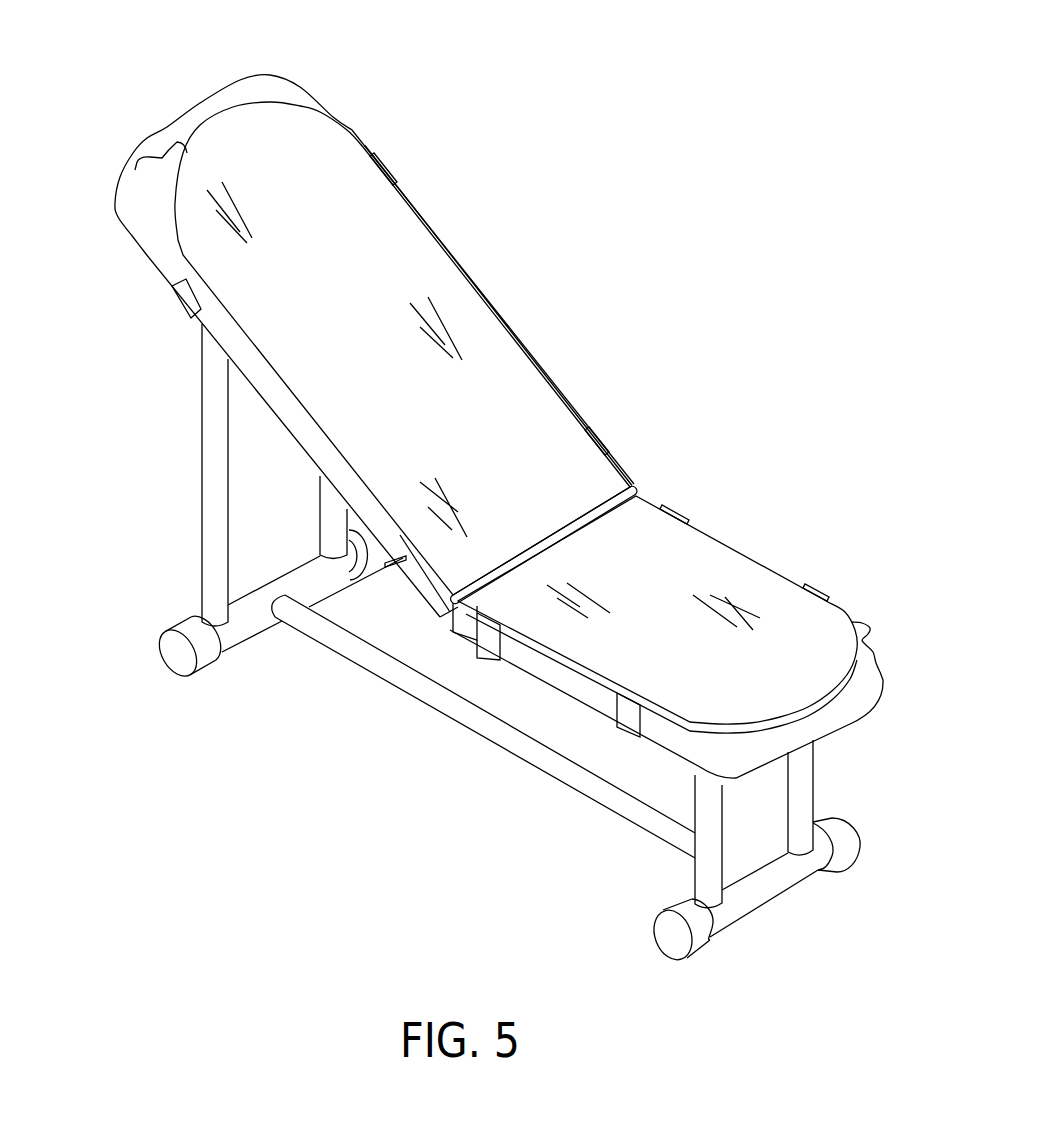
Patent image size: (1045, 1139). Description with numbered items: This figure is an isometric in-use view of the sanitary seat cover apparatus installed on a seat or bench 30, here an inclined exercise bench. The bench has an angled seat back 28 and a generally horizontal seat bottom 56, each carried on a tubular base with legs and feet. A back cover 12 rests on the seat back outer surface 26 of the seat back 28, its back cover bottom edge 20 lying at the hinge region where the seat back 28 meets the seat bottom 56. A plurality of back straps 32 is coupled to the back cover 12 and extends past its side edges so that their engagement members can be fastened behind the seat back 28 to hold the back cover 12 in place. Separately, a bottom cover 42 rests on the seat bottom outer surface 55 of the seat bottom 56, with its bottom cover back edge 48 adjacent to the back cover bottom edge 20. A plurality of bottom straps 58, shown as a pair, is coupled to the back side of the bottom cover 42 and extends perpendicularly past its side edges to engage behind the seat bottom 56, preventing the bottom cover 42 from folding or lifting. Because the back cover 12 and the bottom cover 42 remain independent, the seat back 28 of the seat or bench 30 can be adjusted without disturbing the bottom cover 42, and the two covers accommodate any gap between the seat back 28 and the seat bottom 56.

The back cover 12 is at (473, 348).
The back cover bottom edge 20 is at (555, 528).
The seat back outer surface 26 is at (160, 152).
The seat back 28 is at (143, 247).
The seat or bench 30 is at (652, 822).
The back straps 32 is at (403, 558).
The bottom cover 42 is at (737, 597).
The bottom cover back edge 48 is at (655, 553).
The seat bottom outer surface 55 is at (868, 642).
The seat bottom 56 is at (845, 710).
The bottom straps 58 is at (628, 725).